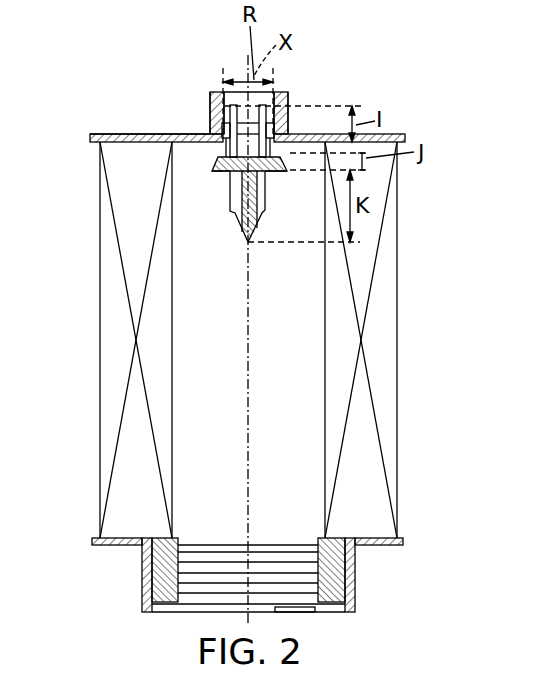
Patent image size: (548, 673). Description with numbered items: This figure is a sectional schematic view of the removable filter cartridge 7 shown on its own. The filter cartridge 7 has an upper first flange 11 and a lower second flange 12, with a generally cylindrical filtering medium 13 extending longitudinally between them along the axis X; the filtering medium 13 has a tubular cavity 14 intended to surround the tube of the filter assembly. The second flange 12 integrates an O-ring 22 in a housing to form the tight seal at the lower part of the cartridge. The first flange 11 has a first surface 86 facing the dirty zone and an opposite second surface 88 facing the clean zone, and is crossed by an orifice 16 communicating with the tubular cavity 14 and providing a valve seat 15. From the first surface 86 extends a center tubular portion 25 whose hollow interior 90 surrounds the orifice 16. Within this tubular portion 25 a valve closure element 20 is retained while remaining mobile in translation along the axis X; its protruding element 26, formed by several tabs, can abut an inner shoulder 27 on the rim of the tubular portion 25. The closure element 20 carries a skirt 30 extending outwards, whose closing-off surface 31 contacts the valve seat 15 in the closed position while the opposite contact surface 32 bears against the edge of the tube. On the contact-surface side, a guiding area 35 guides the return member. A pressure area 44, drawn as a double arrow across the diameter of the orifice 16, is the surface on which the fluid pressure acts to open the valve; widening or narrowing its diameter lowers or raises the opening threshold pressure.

The filter cartridge 7 is at (402, 313).
The first flange 11 is at (90, 137).
The second flange 12 is at (106, 546).
The filtering medium 13 is at (372, 271).
The tubular cavity 14 is at (180, 143).
The valve seat 15 is at (292, 106).
The orifice 16 is at (285, 130).
The valve closure element 20 is at (283, 160).
The O-ring 22 is at (152, 588).
The tubular portion 25 is at (211, 108).
The protruding element 26 is at (233, 100).
The inner shoulder 27 is at (211, 125).
The skirt 30 is at (283, 172).
The closing-off surface 31 is at (218, 158).
The contact surface 32 is at (213, 172).
The guiding area 35 is at (257, 215).
The pressure area 44 is at (258, 80).
The first surface 86 is at (118, 134).
The second surface 88 is at (213, 152).
The hollow interior 90 is at (212, 96).